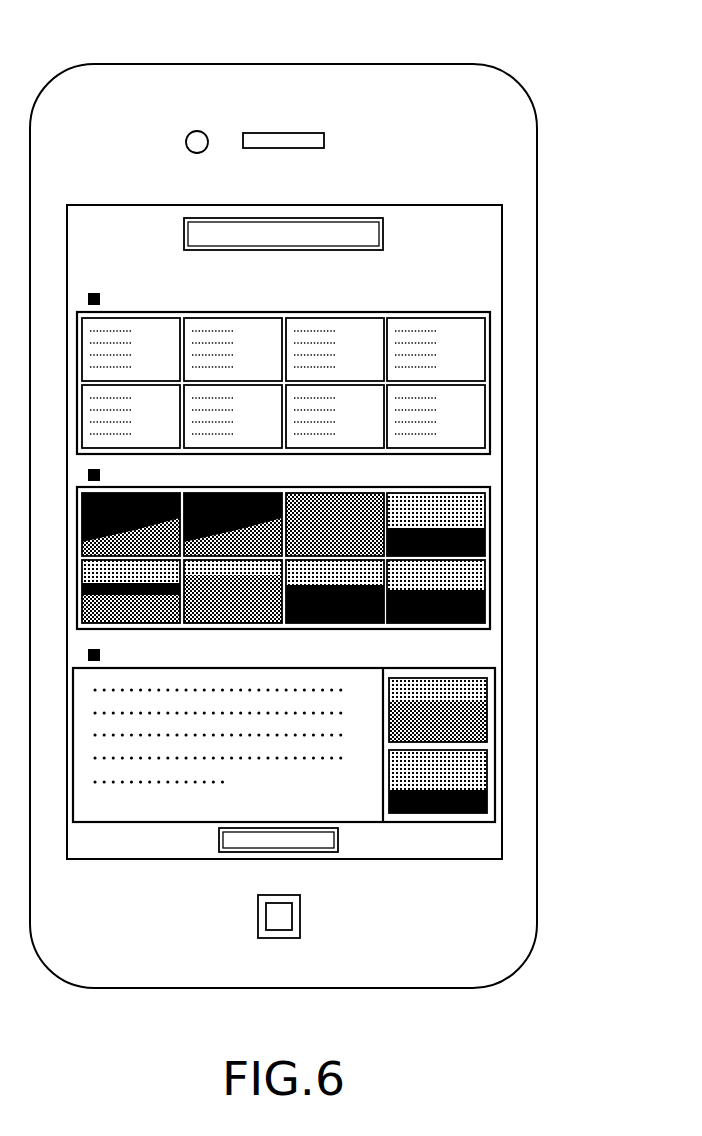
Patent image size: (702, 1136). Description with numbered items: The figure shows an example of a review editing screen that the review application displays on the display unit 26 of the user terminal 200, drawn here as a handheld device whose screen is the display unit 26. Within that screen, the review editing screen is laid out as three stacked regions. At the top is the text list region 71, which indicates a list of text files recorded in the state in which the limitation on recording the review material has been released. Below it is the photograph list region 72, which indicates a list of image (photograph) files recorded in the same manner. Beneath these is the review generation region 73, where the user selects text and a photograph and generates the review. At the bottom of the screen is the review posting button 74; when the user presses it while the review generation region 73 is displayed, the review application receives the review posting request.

The user terminal 200 is at (284, 64).
The display unit 26 is at (502, 250).
The text list region 71 is at (490, 383).
The photograph list region 72 is at (490, 557).
The review generation region 73 is at (495, 748).
The review posting button 74 is at (338, 842).